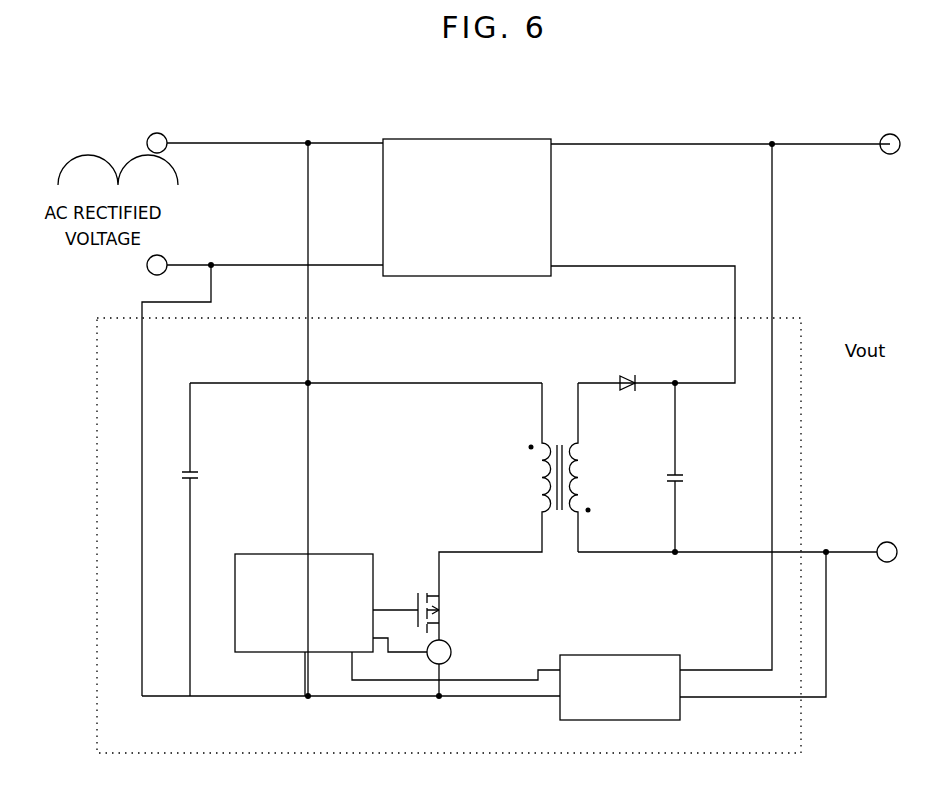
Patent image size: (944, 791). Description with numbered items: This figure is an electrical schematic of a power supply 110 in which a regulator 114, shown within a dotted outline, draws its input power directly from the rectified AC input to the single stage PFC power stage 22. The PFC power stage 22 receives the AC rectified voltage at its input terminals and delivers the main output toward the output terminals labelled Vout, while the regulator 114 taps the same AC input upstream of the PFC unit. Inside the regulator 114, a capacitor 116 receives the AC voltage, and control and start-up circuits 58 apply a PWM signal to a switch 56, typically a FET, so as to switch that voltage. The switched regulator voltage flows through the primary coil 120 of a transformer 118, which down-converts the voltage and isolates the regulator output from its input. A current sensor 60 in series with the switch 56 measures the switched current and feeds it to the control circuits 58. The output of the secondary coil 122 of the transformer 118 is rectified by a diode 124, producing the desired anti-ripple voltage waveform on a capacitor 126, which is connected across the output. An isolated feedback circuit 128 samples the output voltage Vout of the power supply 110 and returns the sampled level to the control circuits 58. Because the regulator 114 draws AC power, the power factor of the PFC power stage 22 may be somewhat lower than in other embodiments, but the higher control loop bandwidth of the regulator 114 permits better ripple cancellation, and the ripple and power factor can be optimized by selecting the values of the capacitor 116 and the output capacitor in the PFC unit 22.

The PFC power stage 22 is at (478, 139).
The power supply 110 is at (789, 112).
The regulator 114 is at (97, 520).
The capacitor 116 is at (199, 478).
The transformer 118 is at (536, 489).
The primary coil 120 is at (538, 485).
The secondary coil 122 is at (582, 483).
The diode 124 is at (638, 375).
The capacitor 126 is at (684, 475).
The isolated feedback circuit 128 is at (630, 655).
The control and start-up circuits 58 is at (330, 553).
The switch 56 is at (443, 605).
The current sensor 60 is at (452, 658).